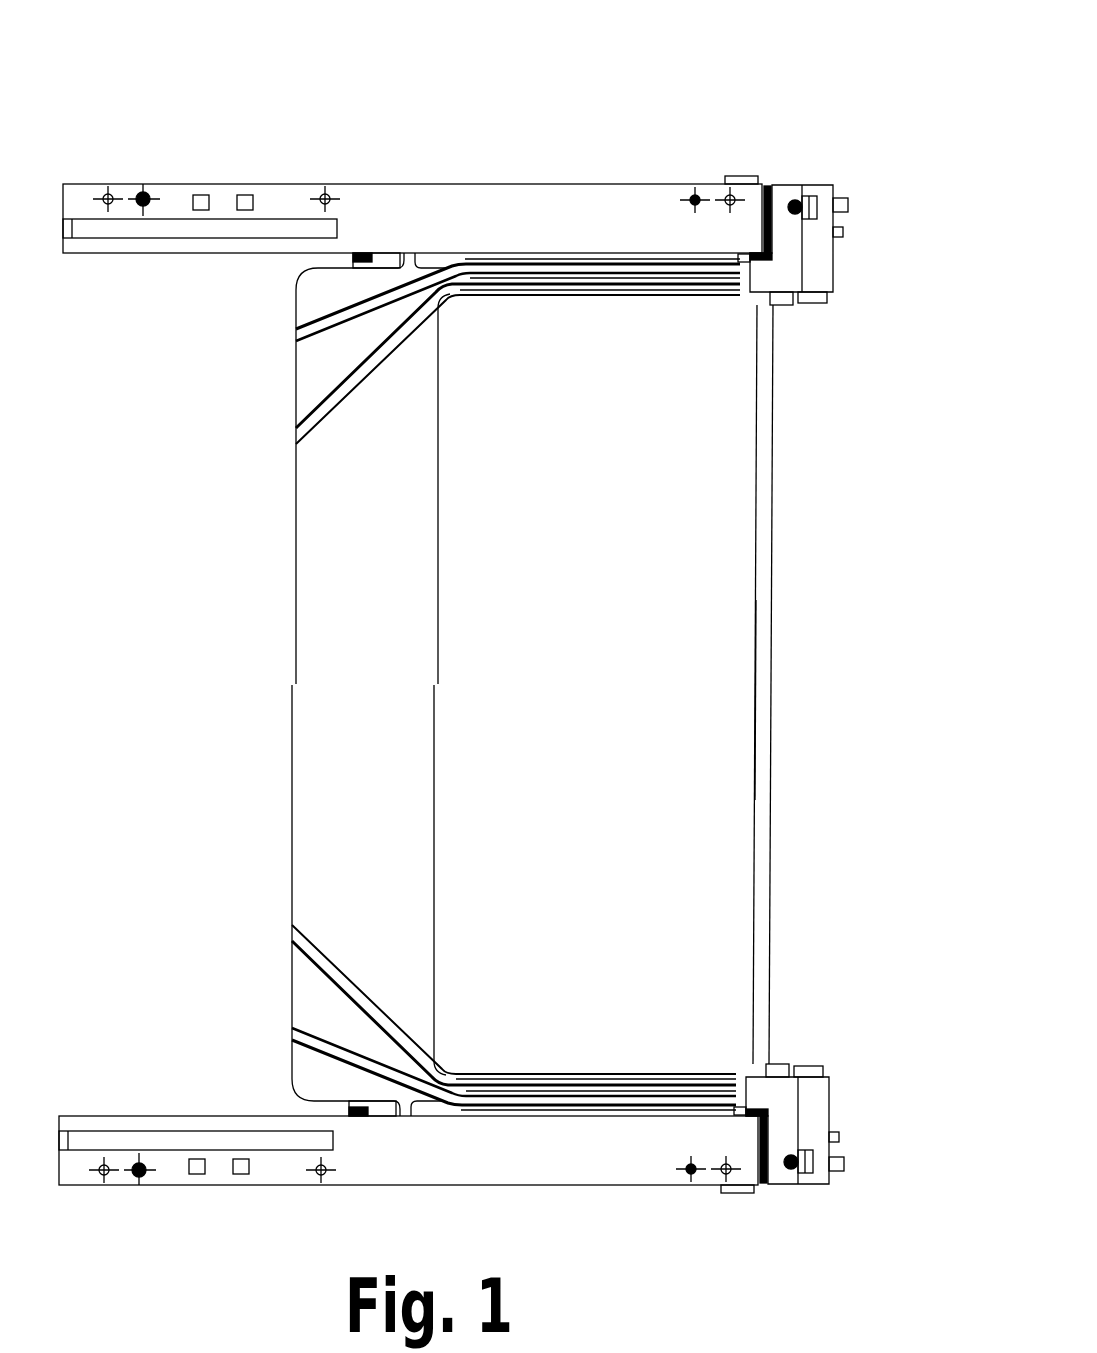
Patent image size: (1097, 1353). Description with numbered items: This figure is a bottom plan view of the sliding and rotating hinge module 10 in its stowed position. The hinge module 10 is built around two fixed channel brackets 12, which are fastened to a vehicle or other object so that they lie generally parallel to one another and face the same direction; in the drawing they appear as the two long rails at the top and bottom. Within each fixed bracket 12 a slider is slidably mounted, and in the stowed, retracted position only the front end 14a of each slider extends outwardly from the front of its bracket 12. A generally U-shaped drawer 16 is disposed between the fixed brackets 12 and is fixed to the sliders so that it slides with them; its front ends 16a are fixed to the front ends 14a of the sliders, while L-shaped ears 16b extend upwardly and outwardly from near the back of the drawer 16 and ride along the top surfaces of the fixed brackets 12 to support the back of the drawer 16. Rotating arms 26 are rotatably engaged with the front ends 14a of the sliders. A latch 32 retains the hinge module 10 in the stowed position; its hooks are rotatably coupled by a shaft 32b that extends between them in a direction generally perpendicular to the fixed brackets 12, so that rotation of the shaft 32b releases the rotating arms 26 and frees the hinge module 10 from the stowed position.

The hinge module 10 is at (826, 106).
The fixed channel bracket 12 is at (182, 192).
The front end of slider 14a is at (826, 262).
The drawer 16 is at (407, 665).
The front end of drawer 16a is at (738, 305).
The L-shaped ear 16b is at (348, 258).
The rotating arm 26 is at (832, 200).
The latch 32 is at (767, 565).
The shaft 32b is at (767, 695).